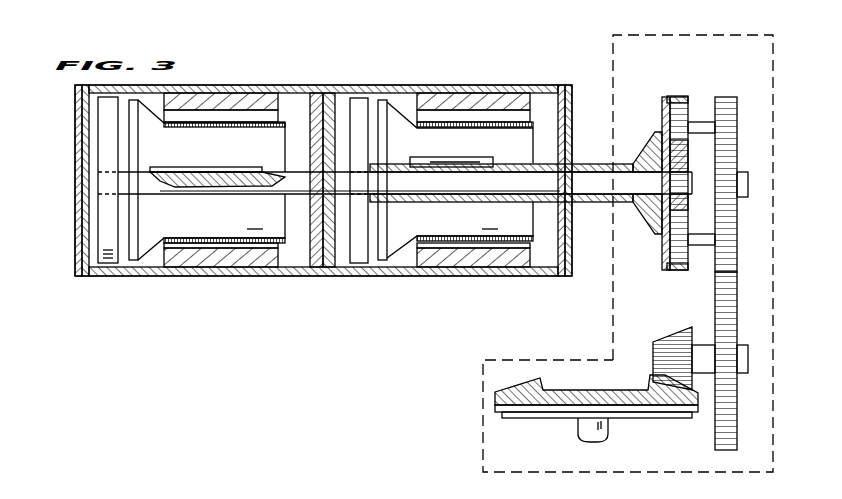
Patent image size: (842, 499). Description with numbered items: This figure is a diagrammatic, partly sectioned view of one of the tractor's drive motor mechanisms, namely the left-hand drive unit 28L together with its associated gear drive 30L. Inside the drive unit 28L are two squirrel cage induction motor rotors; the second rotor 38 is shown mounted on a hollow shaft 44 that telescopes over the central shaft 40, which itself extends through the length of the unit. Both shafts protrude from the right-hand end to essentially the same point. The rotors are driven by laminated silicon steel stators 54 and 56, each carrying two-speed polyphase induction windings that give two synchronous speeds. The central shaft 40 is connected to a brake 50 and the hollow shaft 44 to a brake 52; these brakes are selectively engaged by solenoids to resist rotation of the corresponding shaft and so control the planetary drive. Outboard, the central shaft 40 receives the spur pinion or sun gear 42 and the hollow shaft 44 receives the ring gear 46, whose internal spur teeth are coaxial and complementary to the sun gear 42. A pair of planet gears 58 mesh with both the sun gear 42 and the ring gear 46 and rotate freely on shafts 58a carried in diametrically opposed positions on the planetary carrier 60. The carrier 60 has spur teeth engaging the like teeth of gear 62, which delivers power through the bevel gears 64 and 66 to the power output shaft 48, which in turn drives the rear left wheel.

The drive unit 28L is at (367, 220).
The gear drive 30L is at (628, 243).
The squirrel cage induction motor rotor 38 is at (373, 221).
The central shaft 40 is at (300, 186).
The spur pinion gear 42 is at (683, 164).
The hollow shaft 44 is at (516, 180).
The ring gear 46 is at (667, 97).
The power output shaft 48 is at (608, 433).
The brake 50 is at (105, 218).
The brake 52 is at (370, 277).
The stator 54 is at (223, 100).
The stator 56 is at (455, 100).
The planet gears 58 is at (695, 158).
The shafts 58a is at (692, 123).
The planetary carrier 60 is at (740, 110).
The gear 62 is at (733, 304).
The bevel gear 64 is at (673, 338).
The bevel gear 66 is at (570, 392).